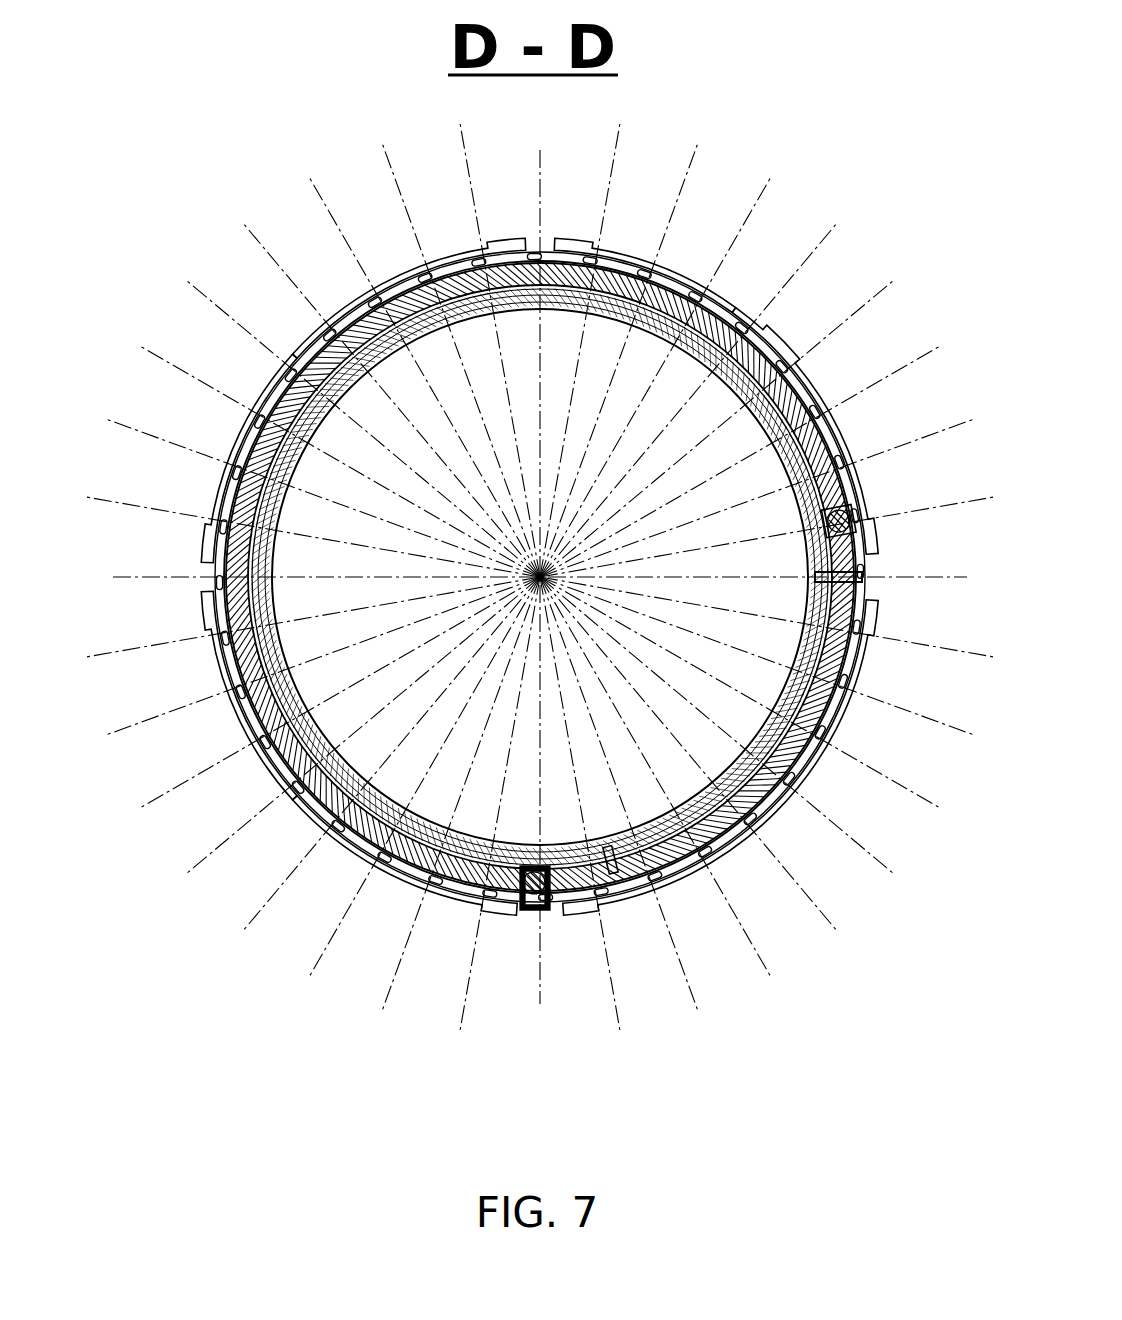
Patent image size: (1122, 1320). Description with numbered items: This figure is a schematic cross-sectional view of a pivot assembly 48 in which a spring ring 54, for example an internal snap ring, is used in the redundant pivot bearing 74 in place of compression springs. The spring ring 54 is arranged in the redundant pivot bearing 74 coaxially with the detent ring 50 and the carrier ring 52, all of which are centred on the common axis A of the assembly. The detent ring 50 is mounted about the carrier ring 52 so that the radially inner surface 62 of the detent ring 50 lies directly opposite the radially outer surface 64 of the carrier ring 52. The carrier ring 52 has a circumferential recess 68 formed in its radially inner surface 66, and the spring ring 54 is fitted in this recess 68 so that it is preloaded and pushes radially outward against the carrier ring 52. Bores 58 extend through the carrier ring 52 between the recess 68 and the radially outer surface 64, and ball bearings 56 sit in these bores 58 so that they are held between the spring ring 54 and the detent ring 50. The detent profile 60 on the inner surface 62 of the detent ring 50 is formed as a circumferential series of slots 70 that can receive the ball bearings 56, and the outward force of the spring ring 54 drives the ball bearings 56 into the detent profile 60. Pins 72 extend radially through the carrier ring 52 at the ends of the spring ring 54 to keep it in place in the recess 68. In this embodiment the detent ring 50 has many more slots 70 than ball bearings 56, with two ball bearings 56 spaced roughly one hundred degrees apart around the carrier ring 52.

The pivot assembly 48 is at (838, 137).
The detent ring 50 is at (580, 244).
The carrier ring 52 is at (300, 358).
The spring ring 54 is at (808, 392).
The ball bearings 56 is at (862, 527).
The bores 58 is at (580, 897).
The detent profile 60 is at (293, 692).
The radially inner surface of the detent ring 62 is at (540, 577).
The radially outer surface of the carrier ring 64 is at (330, 813).
The radially inner surface of the carrier ring 66 is at (758, 736).
The circumferential recess 68 is at (693, 817).
The slots 70 is at (697, 301).
The pins 72 is at (872, 585).
The redundant pivot bearing 74 is at (237, 448).
The central axis A is at (540, 577).